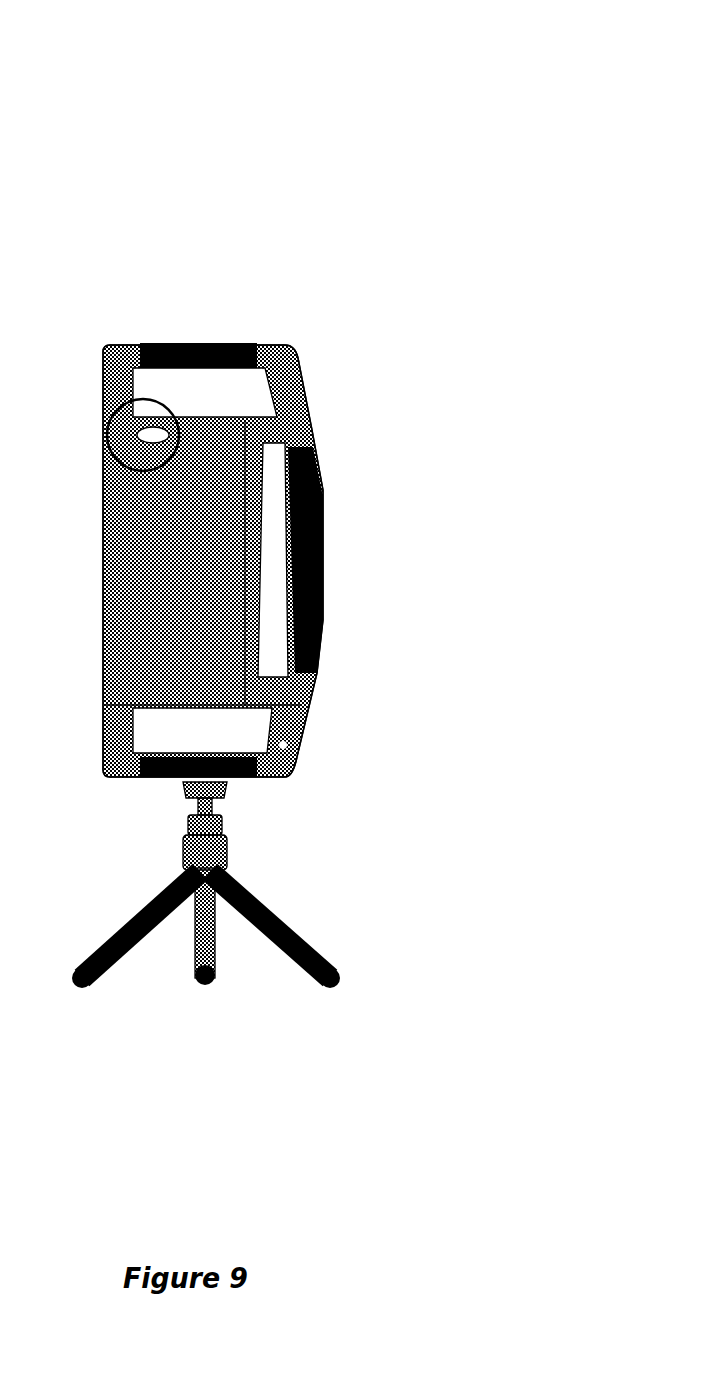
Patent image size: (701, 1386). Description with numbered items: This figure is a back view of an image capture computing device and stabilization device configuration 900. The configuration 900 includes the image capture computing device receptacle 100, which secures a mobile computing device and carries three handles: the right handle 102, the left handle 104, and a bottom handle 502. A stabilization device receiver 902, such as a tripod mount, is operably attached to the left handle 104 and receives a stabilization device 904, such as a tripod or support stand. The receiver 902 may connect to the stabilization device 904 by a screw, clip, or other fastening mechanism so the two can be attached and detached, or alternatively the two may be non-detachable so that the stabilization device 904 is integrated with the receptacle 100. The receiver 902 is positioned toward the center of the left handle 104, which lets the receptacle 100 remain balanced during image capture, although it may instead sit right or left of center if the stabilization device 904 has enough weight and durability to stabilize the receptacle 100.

The image capture computing device and stabilization device configuration 900 is at (192, 260).
The image capture computing device receptacle 100 is at (410, 566).
The right handle 102 is at (111, 351).
The bottom handle 502 is at (317, 674).
The left handle 104 is at (115, 777).
The stabilization device receiver 902 is at (233, 780).
The stabilization device 904 is at (227, 850).